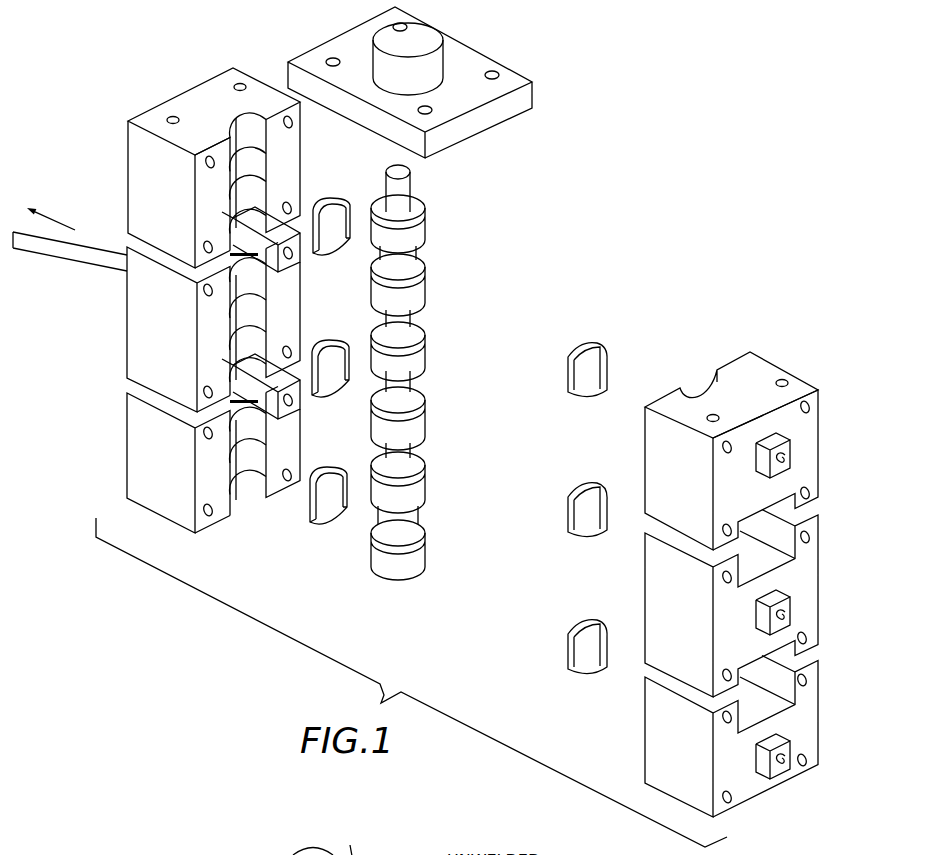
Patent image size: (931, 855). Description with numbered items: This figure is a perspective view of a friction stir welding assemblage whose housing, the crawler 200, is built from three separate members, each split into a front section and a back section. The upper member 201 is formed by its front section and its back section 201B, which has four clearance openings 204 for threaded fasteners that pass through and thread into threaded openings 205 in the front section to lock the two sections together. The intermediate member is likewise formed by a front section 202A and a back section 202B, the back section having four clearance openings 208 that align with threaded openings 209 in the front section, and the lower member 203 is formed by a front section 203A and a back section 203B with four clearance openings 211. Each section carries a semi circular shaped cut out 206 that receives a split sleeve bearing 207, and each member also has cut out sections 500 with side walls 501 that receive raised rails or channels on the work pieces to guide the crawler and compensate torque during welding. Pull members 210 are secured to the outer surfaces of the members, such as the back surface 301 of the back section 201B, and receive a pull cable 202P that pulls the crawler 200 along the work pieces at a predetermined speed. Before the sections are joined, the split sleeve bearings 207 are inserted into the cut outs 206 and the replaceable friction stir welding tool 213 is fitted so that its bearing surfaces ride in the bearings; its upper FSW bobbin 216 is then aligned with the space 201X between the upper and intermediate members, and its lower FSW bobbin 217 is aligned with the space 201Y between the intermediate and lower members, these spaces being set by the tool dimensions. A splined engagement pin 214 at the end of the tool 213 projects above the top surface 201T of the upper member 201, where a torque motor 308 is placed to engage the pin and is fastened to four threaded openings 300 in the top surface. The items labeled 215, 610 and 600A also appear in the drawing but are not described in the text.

The crawler 200 is at (327, 345).
The upper member 201 is at (336, 345).
The top surface of the upper member 201T is at (226, 261).
The back section of the upper member 201B is at (754, 542).
The space between the upper and intermediate members 201X is at (335, 345).
The space between the intermediate and lower members 201Y is at (336, 510).
The front section of the intermediate member 202A is at (181, 328).
The back section of the intermediate member 202B is at (720, 600).
The pull cable 202P is at (68, 261).
The lower member 203 is at (449, 626).
The front section of the lower member 203A is at (181, 460).
The back section of the lower member 203B is at (758, 745).
The clearance openings 204 is at (760, 457).
The threaded openings 205 is at (250, 183).
The semi circular shaped cut out 206 is at (286, 309).
The split sleeve bearing 207 is at (458, 420).
The clearance openings 208 is at (763, 592).
The threaded openings 209 is at (183, 303).
The pull member 210 is at (727, 608).
The clearance openings 211 is at (760, 745).
The friction stir welding tool 213 is at (410, 396).
The splined engagement pin 214 is at (430, 187).
The collar 215 is at (427, 387).
The upper FSW bobbin 216 is at (447, 305).
The lower FSW bobbin 217 is at (448, 434).
The threaded openings 300 is at (178, 78).
The back surface of the back section 301 is at (776, 542).
The torque motor 308 is at (410, 82).
The cut out sections 500 is at (291, 318).
The side walls 501 is at (187, 221).
The tube element 610 is at (255, 838).
The tube assembly 600A is at (391, 841).